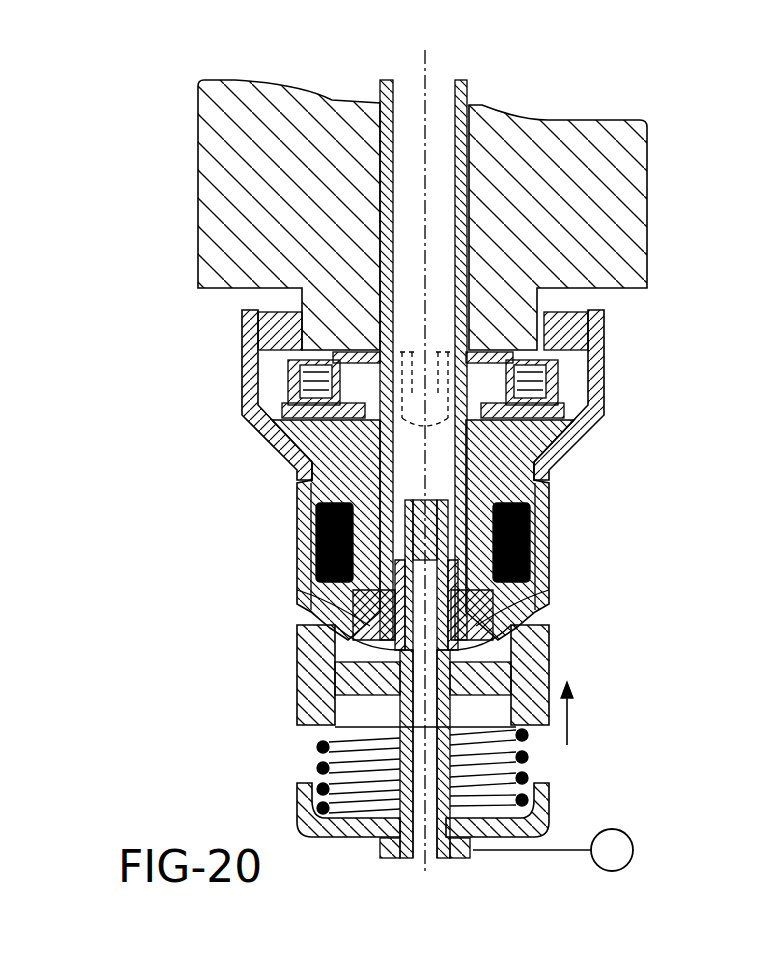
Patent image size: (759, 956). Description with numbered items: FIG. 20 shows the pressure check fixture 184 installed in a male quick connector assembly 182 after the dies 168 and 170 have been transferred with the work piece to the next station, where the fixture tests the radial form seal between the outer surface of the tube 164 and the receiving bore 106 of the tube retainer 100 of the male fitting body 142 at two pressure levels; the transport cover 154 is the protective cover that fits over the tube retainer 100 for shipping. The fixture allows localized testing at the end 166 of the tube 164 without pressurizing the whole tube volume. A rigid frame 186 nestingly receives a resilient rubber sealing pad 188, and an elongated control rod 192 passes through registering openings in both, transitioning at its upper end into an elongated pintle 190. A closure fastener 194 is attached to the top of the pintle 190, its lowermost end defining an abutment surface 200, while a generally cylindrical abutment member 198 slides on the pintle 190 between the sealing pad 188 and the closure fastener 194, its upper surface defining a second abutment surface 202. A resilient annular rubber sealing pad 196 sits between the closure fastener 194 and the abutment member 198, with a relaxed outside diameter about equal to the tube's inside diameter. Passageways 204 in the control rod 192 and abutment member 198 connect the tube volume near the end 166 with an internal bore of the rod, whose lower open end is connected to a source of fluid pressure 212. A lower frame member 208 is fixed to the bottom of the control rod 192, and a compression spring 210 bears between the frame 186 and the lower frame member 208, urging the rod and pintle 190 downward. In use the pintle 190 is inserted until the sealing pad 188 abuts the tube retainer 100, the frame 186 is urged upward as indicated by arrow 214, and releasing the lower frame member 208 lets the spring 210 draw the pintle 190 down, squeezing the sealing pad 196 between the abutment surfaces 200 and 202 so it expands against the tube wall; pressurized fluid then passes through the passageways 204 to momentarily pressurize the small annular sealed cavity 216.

The tube retainer 100 is at (248, 432).
The receiving bore 106 is at (470, 310).
The male fitting body 142 is at (247, 470).
The transport cover 154 is at (603, 432).
The tube 164 is at (470, 99).
The tube end 166 is at (300, 593).
The die 168 is at (212, 148).
The die 170 is at (635, 172).
The male quick connector assembly 182 is at (588, 464).
The pressure check fixture 184 is at (611, 684).
The frame 186 is at (297, 668).
The sealing pad 188 is at (297, 711).
The pintle 190 is at (445, 478).
The control rod 192 is at (305, 833).
The closure fastener 194 is at (372, 475).
The sealing pad 196 is at (552, 562).
The abutment member 198 is at (552, 666).
The abutment surface 200 is at (552, 532).
The second abutment surface 202 is at (552, 577).
The passageways 204 is at (297, 665).
The lower frame member 208 is at (552, 790).
The compression spring 210 is at (552, 757).
The source of fluid pressure 212 is at (633, 850).
The arrow 214 is at (575, 720).
The sealed cavity 216 is at (297, 556).